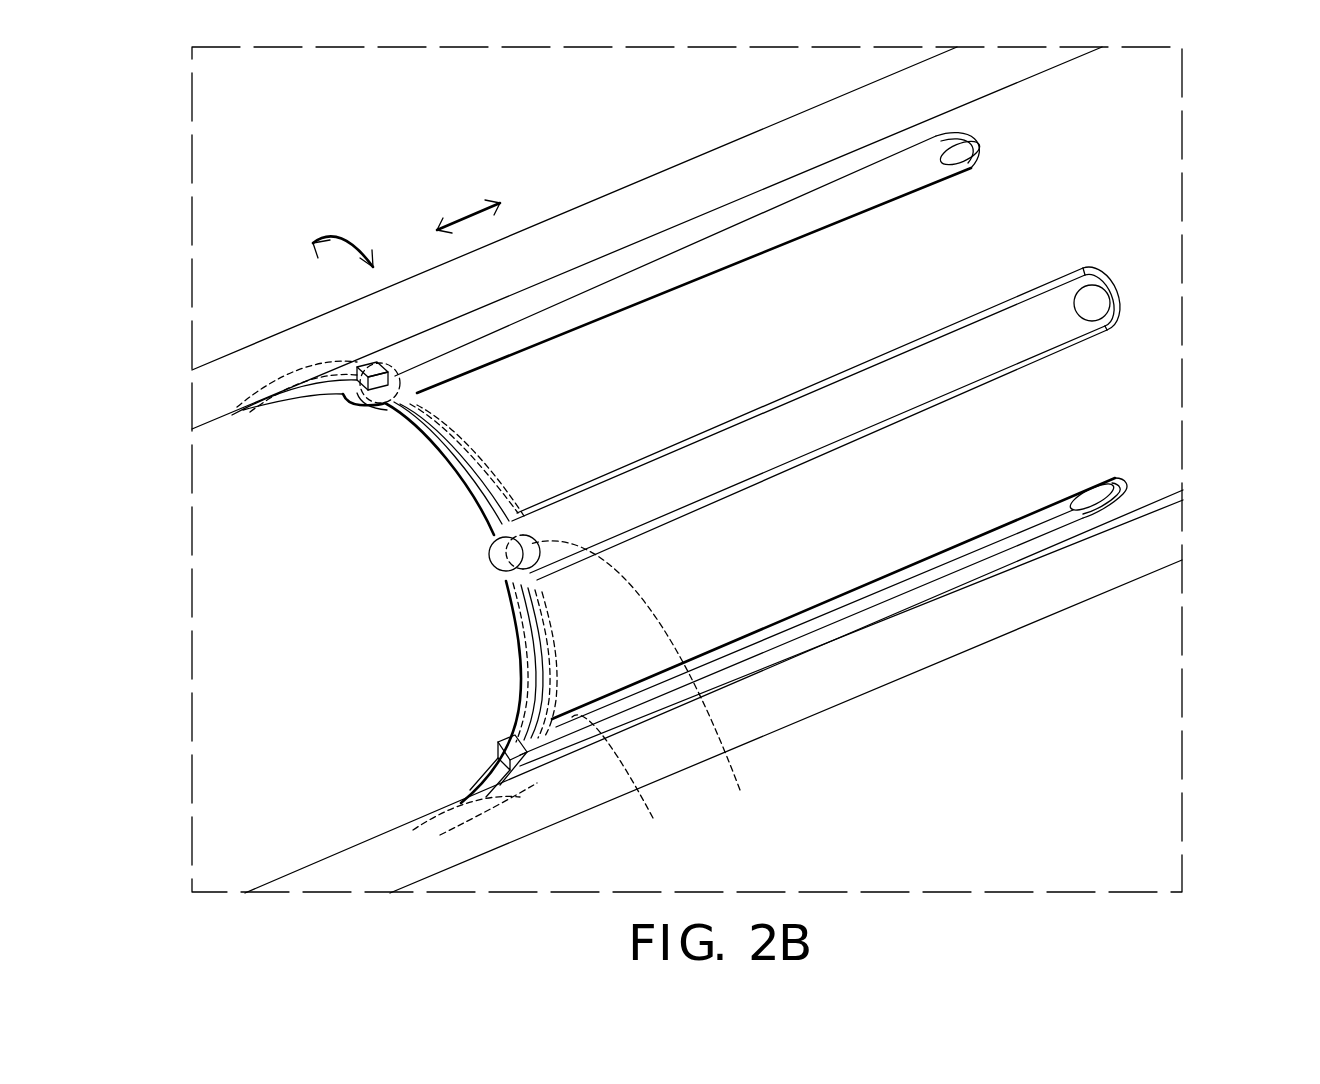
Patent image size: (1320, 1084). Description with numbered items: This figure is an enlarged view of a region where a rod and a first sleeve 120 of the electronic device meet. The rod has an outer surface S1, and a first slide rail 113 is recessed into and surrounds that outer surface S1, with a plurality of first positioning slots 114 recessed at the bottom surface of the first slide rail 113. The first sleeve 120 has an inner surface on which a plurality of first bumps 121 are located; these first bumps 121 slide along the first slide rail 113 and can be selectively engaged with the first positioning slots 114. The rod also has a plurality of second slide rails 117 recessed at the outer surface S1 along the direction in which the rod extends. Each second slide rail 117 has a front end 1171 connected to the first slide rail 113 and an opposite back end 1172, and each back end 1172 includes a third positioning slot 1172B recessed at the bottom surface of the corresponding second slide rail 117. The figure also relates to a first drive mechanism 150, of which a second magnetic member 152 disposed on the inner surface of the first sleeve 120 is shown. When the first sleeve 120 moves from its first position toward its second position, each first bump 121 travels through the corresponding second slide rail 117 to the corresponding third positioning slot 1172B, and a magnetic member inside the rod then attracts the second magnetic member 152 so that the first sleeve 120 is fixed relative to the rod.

The first slide rail 113 is at (437, 443).
The first positioning slots 114 is at (497, 563).
The second slide rails 117 is at (825, 425).
The front end 1171 is at (540, 521).
The back end 1172 is at (1107, 328).
The third positioning slot 1172B is at (1088, 303).
The first sleeve 120 is at (847, 699).
The first bumps 121 is at (646, 684).
The first drive mechanism 150 is at (647, 876).
The second magnetic member 152 is at (503, 798).
The outer surface S1 is at (307, 862).